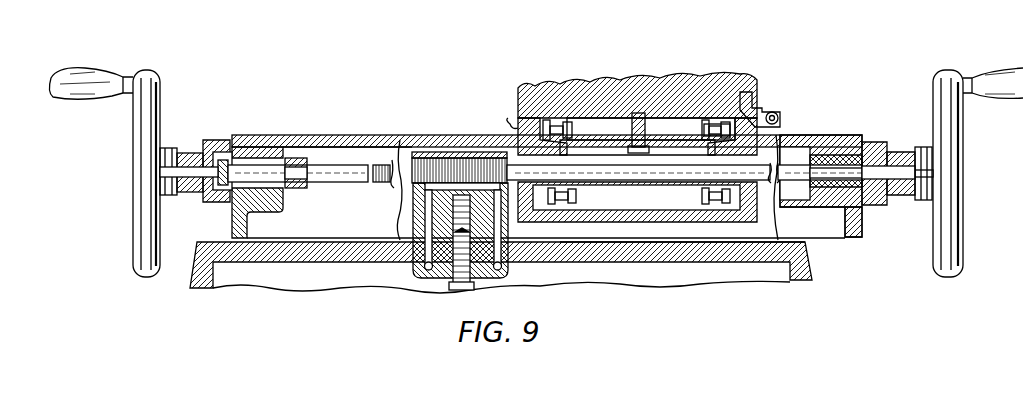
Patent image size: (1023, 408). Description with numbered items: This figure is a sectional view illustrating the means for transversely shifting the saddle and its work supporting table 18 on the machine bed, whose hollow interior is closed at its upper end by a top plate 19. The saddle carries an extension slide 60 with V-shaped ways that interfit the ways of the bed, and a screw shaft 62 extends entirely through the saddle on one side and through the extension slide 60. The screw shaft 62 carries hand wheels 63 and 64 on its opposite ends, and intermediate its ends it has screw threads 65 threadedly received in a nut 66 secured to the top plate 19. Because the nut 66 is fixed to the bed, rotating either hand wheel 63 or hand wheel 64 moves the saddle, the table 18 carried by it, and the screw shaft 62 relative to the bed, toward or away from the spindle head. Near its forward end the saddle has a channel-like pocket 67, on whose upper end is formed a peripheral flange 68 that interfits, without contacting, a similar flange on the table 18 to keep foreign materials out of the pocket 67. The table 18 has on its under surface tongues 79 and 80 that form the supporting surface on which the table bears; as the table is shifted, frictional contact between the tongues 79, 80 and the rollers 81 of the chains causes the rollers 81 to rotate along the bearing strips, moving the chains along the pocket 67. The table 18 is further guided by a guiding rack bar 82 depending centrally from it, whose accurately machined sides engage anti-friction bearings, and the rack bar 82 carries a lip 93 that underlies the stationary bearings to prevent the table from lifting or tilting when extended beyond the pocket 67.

The work supporting table 18 is at (546, 118).
The top plate 19 is at (326, 250).
The extension slide 60 is at (380, 134).
The screw shaft 62 is at (356, 181).
The hand wheel 63 is at (142, 220).
The hand wheel 64 is at (953, 238).
The screw threads 65 is at (385, 183).
The nut 66 is at (462, 152).
The channel-like pocket 67 is at (746, 222).
The peripheral flange 68 is at (746, 94).
The tongue 79 is at (560, 125).
The tongue 80 is at (713, 121).
The roller 81 is at (639, 198).
The guiding rack bar 82 is at (630, 140).
The lip 93 is at (650, 132).